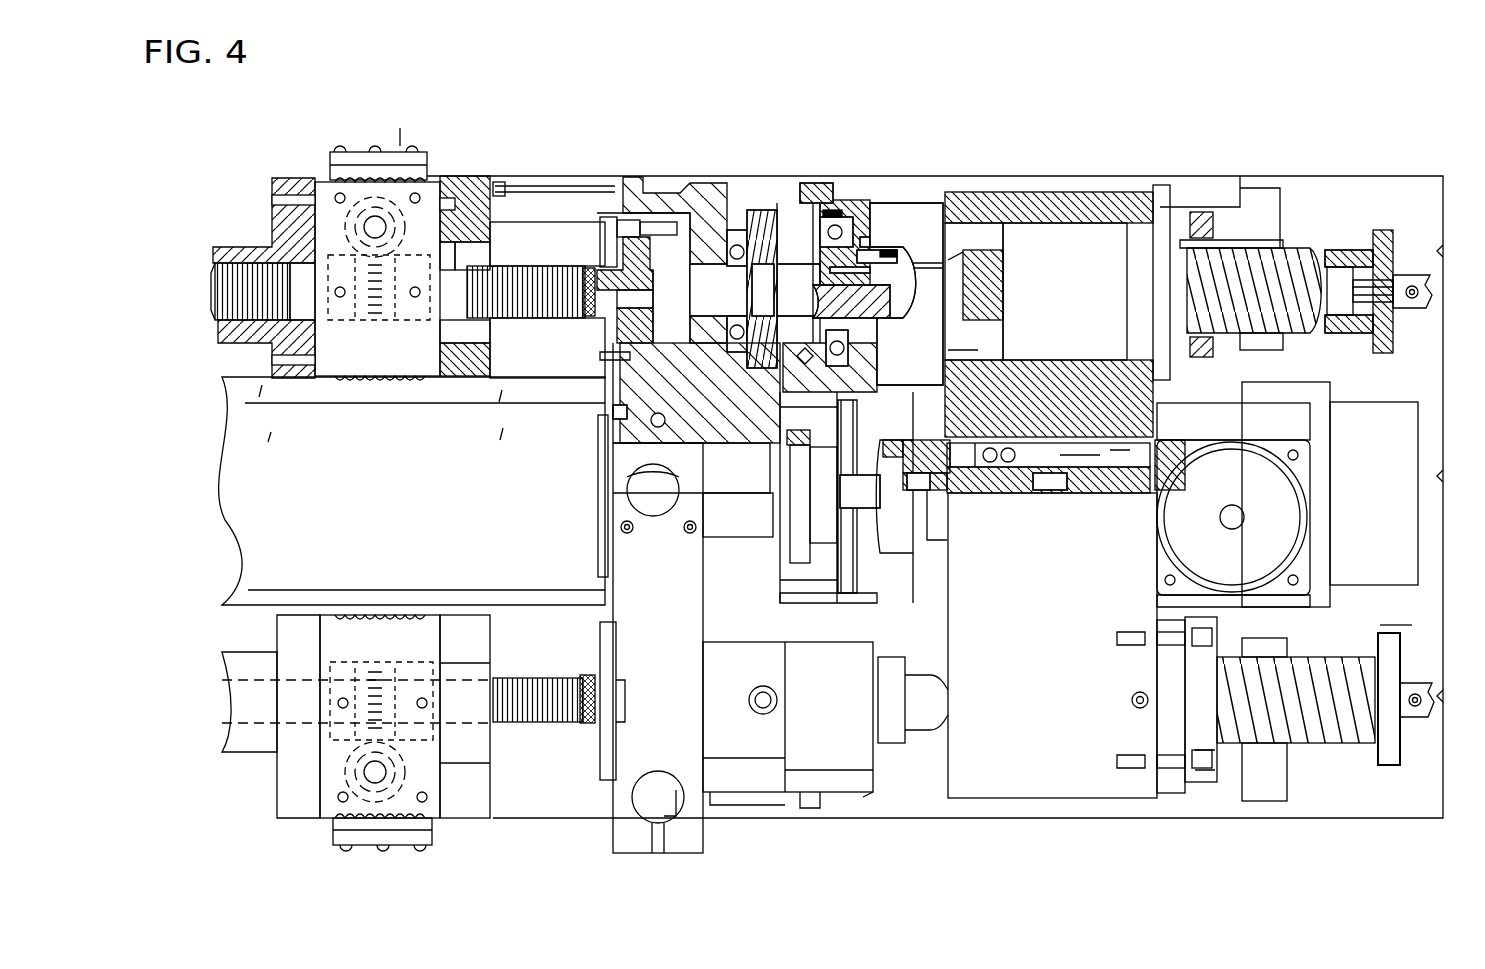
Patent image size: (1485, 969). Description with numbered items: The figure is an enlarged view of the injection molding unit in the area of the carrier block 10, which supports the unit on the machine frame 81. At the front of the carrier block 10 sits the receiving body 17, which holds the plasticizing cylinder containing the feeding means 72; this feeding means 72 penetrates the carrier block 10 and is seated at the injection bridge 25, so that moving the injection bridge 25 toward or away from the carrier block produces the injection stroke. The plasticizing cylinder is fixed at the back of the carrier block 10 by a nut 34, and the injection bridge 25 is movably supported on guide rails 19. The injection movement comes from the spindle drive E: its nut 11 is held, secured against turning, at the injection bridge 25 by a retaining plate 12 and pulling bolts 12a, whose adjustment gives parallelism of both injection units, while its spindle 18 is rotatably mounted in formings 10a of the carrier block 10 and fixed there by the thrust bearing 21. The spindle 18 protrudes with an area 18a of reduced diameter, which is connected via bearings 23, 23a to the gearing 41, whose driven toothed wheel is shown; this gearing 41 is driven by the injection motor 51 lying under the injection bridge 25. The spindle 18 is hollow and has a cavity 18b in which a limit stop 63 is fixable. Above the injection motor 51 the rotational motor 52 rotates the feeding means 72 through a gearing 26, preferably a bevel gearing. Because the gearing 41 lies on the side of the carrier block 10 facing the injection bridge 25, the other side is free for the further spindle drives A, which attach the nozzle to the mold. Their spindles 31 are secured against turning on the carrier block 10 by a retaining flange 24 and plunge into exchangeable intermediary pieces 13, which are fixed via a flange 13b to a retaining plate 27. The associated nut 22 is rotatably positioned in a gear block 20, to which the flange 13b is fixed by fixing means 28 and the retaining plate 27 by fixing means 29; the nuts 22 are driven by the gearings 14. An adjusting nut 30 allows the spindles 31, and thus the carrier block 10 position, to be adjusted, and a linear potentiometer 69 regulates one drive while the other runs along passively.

The carrier block 10 is at (700, 397).
The formings of the carrier block 10a is at (830, 727).
The nut 11 is at (1044, 289).
The retaining plate 12 is at (1197, 220).
The pulling bolts 12a is at (1222, 750).
The intermediary pieces 13 is at (228, 342).
The flange 13b is at (288, 227).
The gearings 14 is at (365, 170).
The receiving body 17 is at (468, 546).
The spindle 18 is at (1297, 270).
The area of reduced diameter 18a is at (917, 287).
The cavity 18b is at (1338, 262).
The guide rails 19 is at (1430, 292).
The gear block 20 is at (383, 357).
The thrust bearing 21 is at (620, 208).
The nut 22 is at (410, 118).
The bearing 23 is at (730, 240).
The bearing 23a is at (803, 220).
The retaining flange 24 is at (605, 268).
The injection bridge 25 is at (1010, 207).
The gearing 26 is at (1273, 423).
The retaining plate 27 is at (470, 176).
The fixing means 28 is at (254, 426).
The fixing means 29 is at (515, 419).
The adjusting nut 30 is at (600, 320).
The spindles 31 is at (228, 287).
The nut 34 is at (800, 550).
The gearing 41 is at (752, 220).
The injection motor 51 is at (1378, 459).
The rotational motor 52 is at (1262, 499).
The limit stop 63 is at (1380, 227).
The linear potentiometer 69 is at (1158, 182).
The feeding means 72 is at (857, 500).
The machine frame 81 is at (1418, 619).
The further spindle drives A is at (487, 125).
The spindle drive E is at (962, 163).